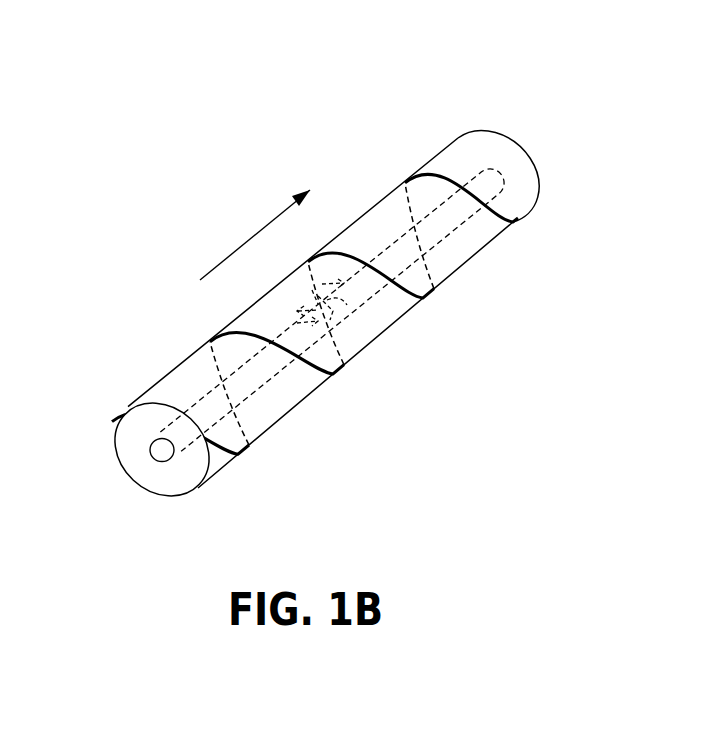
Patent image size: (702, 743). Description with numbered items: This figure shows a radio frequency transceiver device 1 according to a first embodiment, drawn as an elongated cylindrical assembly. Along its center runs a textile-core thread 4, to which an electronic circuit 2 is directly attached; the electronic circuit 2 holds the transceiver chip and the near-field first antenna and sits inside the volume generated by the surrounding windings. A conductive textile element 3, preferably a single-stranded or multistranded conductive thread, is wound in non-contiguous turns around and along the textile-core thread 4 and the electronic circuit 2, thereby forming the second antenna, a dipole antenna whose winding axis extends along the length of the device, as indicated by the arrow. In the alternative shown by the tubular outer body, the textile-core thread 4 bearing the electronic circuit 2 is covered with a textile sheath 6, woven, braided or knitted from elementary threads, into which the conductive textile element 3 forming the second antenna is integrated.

The radio frequency transceiver device 1 is at (140, 328).
The electronic circuit 2 is at (338, 300).
The textile element 3 is at (515, 224).
The textile-core thread 4 is at (150, 452).
The textile sheath 6 is at (283, 410).